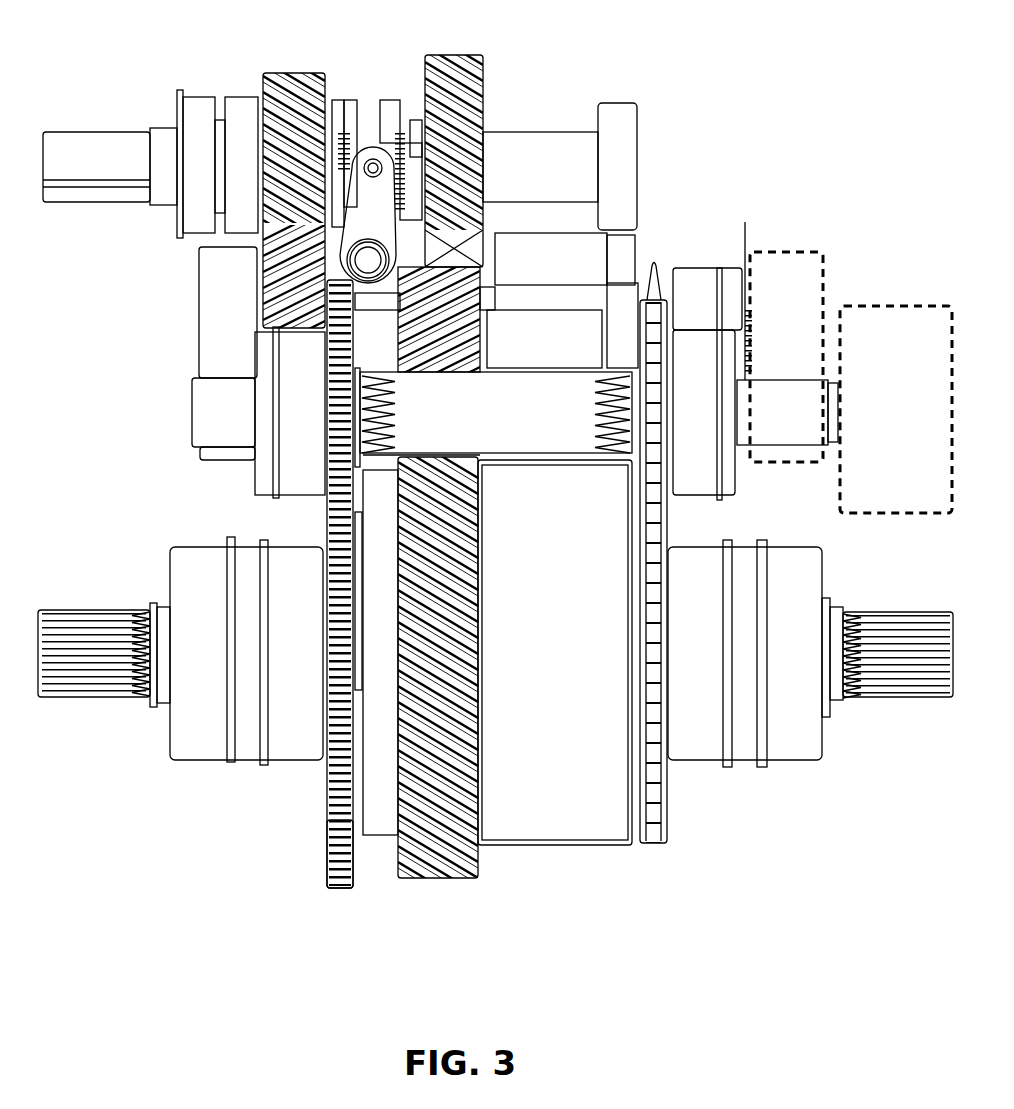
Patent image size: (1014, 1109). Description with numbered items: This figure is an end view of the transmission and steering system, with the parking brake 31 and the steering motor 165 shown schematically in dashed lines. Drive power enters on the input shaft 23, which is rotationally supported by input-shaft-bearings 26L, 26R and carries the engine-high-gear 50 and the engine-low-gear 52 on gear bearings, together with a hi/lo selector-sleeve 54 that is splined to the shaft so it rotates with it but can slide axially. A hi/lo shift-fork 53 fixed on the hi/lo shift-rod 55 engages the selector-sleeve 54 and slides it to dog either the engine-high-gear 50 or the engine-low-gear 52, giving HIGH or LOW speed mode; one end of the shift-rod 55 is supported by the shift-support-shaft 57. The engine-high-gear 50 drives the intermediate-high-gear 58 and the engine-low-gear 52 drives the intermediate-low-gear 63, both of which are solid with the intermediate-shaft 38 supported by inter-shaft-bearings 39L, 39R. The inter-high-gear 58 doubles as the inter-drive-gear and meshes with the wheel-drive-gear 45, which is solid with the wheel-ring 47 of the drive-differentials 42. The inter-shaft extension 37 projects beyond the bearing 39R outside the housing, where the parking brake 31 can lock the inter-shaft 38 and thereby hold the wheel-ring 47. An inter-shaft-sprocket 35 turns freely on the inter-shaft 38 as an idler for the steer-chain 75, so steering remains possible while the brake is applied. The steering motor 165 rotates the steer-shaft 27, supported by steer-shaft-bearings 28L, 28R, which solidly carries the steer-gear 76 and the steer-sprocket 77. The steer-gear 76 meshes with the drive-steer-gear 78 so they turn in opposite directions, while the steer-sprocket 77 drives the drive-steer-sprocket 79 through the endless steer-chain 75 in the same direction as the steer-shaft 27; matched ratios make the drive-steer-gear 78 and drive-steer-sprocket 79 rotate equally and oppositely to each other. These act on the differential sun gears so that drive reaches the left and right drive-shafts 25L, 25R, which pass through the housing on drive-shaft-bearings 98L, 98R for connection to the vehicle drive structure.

The input shaft 23 is at (516, 176).
The left drive-shaft 25L is at (72, 695).
The right drive-shaft 25R is at (910, 698).
The left input-shaft-bearing 26L is at (247, 97).
The right input-shaft-bearing 26R is at (640, 143).
The steer-shaft 27 is at (504, 421).
The left steer-shaft-bearing 28L is at (253, 467).
The right steer-shaft-bearing 28R is at (738, 470).
The parking brake 31 is at (783, 245).
The inter-shaft-sprocket 35 is at (655, 258).
The inter-shaft extension 37 is at (745, 285).
The intermediate-shaft 38 is at (516, 346).
The left inter-shaft-bearing 39L is at (202, 305).
The right inter-shaft-bearing 39R is at (703, 268).
The drive-differentials 42 is at (570, 914).
The wheel-drive-gear 45 is at (477, 858).
The wheel-ring 47 is at (582, 840).
The engine-high-gear 50 is at (455, 55).
The engine-low-gear 52 is at (304, 73).
The hi/lo shift-fork 53 is at (369, 143).
The hi/lo selector-sleeve 54 is at (355, 98).
The hi/lo shift-rod 55 is at (390, 255).
The shift-support-shaft 57 is at (519, 271).
The intermediate-high-gear 58 is at (483, 297).
The intermediate-low-gear 63 is at (262, 292).
The steer-chain 75 is at (668, 512).
The steer-gear 76 is at (327, 516).
The steer-sprocket 77 is at (670, 415).
The drive-steer-gear 78 is at (327, 845).
The drive-steer-sprocket 79 is at (670, 645).
The left drive-shaft-bearing 98L is at (190, 760).
The right drive-shaft-bearing 98R is at (800, 762).
The steering motor 165 is at (893, 305).